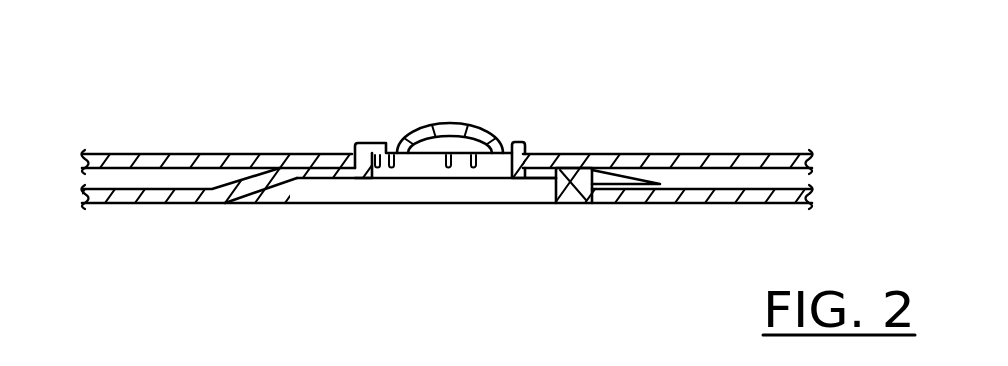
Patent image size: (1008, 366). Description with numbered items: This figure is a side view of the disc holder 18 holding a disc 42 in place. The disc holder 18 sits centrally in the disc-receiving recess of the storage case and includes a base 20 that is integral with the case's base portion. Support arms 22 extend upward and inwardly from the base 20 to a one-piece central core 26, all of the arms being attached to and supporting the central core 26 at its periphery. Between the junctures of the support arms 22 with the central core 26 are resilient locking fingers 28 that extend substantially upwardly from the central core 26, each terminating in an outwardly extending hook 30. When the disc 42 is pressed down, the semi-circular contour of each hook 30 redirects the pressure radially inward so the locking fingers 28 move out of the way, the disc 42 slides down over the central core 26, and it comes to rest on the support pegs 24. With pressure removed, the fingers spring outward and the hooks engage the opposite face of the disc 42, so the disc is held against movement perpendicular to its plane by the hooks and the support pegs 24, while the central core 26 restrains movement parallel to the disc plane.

The disc holder 18 is at (448, 92).
The base 20 is at (740, 203).
The support arms 22 is at (292, 183).
The support pegs 24 is at (573, 173).
The central core 26 is at (428, 125).
The locking fingers 28 is at (530, 153).
The hook 30 is at (528, 153).
The disc 42 is at (727, 154).